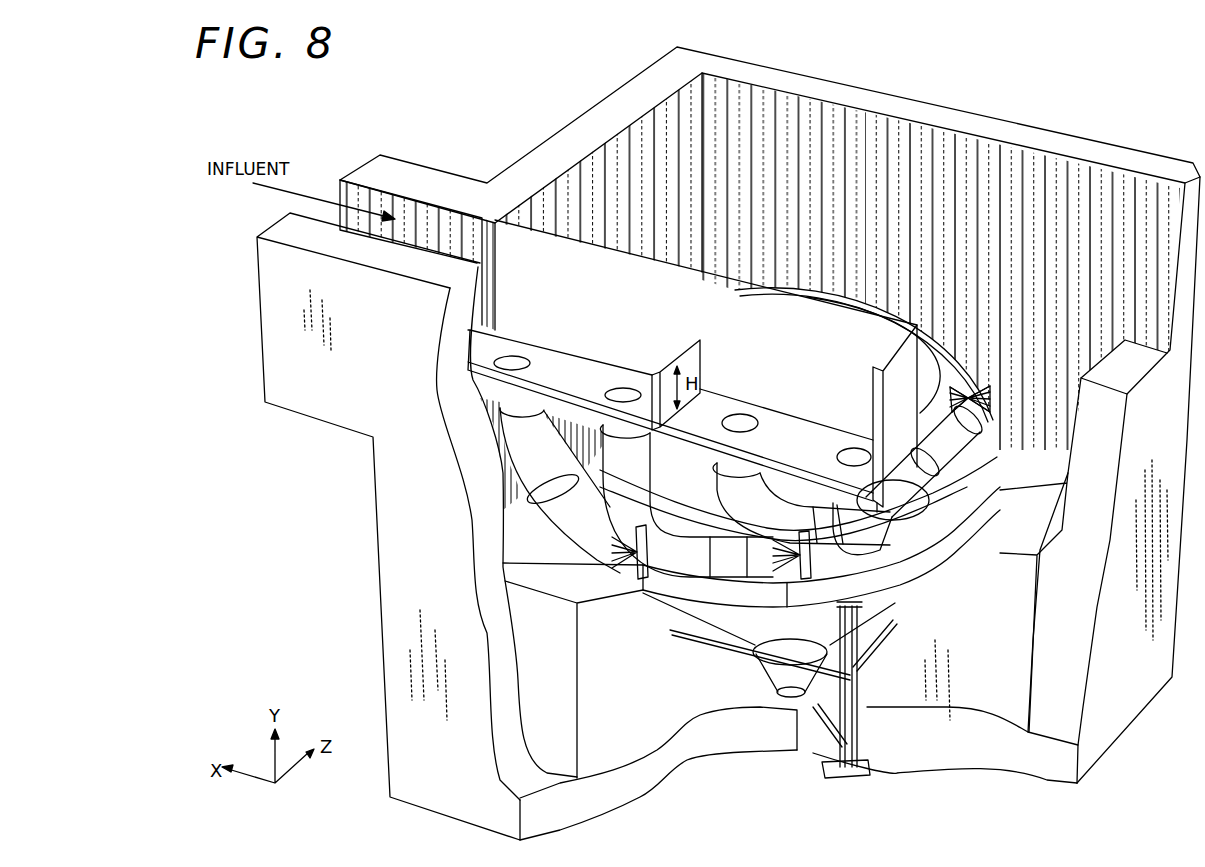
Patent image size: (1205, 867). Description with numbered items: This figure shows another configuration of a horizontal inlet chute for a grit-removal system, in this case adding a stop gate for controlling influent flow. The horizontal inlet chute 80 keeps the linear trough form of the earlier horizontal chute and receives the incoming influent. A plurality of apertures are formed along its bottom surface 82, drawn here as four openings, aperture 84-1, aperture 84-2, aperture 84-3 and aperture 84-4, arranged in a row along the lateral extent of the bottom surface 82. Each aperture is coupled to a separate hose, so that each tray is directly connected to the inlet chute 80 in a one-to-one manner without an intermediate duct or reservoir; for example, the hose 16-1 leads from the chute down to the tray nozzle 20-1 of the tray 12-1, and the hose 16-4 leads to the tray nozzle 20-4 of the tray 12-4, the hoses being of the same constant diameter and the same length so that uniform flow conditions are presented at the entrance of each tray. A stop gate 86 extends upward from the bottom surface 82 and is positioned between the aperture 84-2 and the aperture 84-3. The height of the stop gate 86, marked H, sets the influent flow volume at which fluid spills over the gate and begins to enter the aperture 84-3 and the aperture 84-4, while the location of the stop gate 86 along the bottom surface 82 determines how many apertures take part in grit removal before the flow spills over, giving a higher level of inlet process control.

The horizontal inlet chute 80 is at (583, 257).
The bottom surface 82 is at (692, 400).
The aperture 84-1 is at (512, 360).
The aperture 84-2 is at (623, 392).
The aperture 84-3 is at (740, 420).
The aperture 84-4 is at (858, 455).
The stop gate 86 is at (702, 370).
The tray 12-1 is at (910, 567).
The tray 12-4 is at (953, 350).
The hose 16-1 is at (573, 520).
The hose 16-4 is at (963, 428).
The tray nozzle 20-1 is at (640, 572).
The tray nozzle 20-4 is at (987, 397).